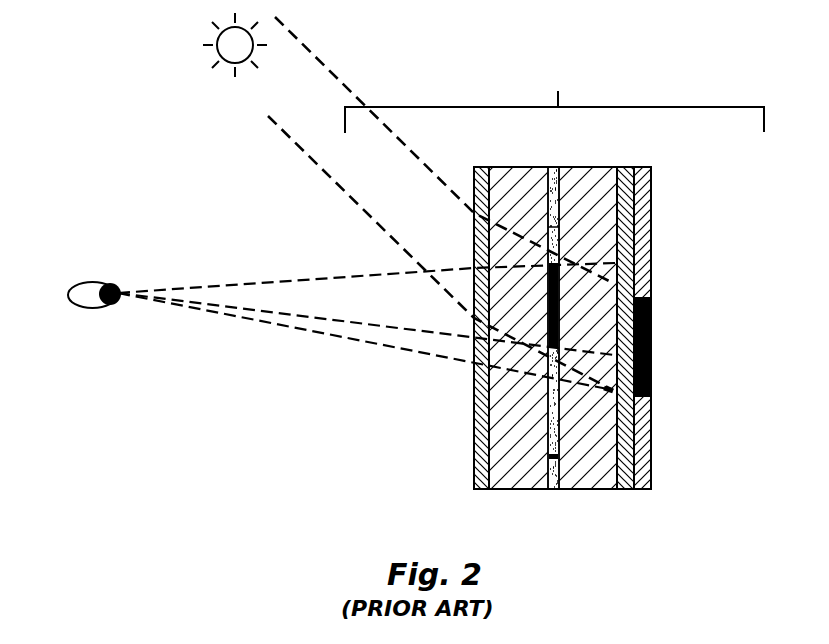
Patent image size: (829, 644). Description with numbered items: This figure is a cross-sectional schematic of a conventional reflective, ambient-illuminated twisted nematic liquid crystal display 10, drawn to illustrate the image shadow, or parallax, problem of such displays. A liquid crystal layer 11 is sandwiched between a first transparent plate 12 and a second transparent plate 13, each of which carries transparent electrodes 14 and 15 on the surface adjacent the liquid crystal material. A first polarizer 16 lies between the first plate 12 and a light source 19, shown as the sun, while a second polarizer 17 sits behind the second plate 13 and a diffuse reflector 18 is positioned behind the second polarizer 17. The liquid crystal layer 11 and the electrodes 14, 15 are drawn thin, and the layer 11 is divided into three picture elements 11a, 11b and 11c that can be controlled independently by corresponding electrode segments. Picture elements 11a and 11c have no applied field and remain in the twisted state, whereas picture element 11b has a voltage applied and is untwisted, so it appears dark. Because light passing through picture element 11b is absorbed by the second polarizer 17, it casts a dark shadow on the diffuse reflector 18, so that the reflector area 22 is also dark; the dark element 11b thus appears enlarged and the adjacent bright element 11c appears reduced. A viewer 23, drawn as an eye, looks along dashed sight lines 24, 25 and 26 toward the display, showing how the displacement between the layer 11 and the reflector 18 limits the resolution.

The reflective twisted nematic liquid crystal display 10 is at (554, 278).
The liquid crystal layer 11 is at (589, 371).
The picture element 11a is at (550, 228).
The picture element 11b is at (565, 306).
The picture element 11c is at (560, 419).
The first transparent plate 12 is at (525, 167).
The second transparent plate 13 is at (583, 167).
The transparent electrode 14 is at (589, 371).
The transparent electrode 15 is at (555, 489).
The first polarizer 16 is at (482, 489).
The second polarizer 17 is at (626, 489).
The diffuse reflector 18 is at (642, 167).
The light source 19 is at (224, 66).
The dark area of diffuse reflector 22 is at (652, 343).
The viewer 23 is at (92, 282).
The line of sight 24 is at (305, 276).
The line of sight 25 is at (265, 309).
The line of sight 26 is at (370, 343).